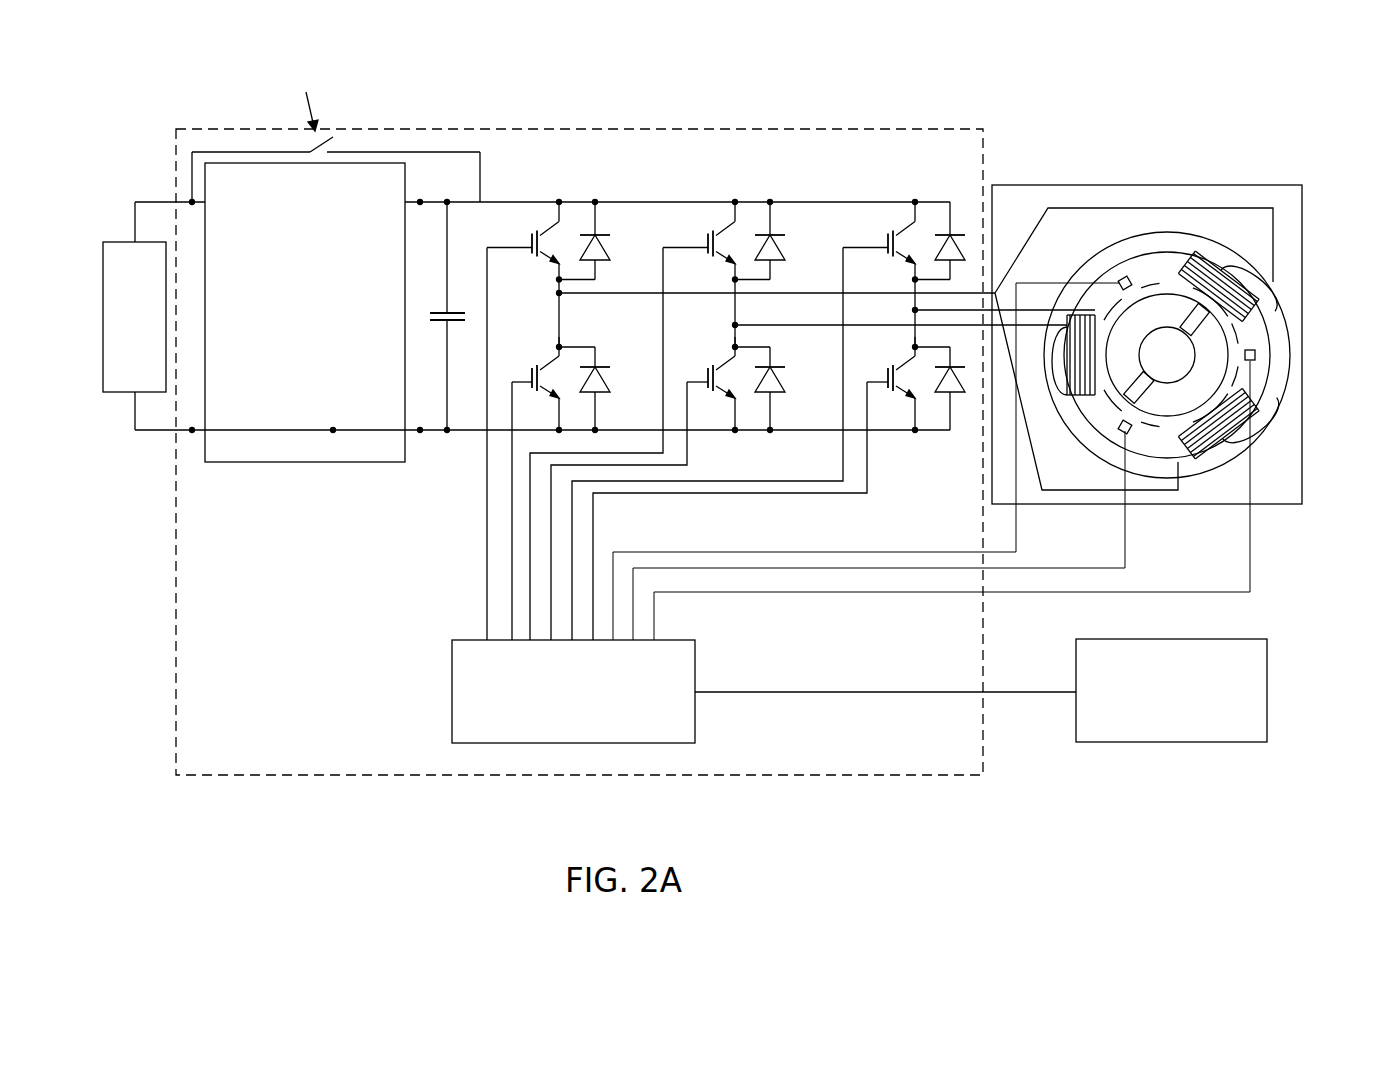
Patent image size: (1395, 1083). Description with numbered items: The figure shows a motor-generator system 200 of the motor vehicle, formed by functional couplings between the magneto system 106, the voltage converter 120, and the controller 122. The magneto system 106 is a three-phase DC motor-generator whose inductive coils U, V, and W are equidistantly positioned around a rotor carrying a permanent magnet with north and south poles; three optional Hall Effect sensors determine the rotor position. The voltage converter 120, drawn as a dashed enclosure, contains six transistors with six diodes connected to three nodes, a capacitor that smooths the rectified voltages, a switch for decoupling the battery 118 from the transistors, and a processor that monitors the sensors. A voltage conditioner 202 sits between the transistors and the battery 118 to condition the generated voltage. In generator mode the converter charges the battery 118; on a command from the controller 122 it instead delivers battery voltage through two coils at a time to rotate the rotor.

The motor-generator system 200 is at (1150, 102).
The battery 118 is at (118, 240).
The voltage conditioner 202 is at (310, 463).
The voltage converter 120 is at (808, 775).
The magneto system 106 is at (1302, 445).
The controller 122 is at (1267, 715).